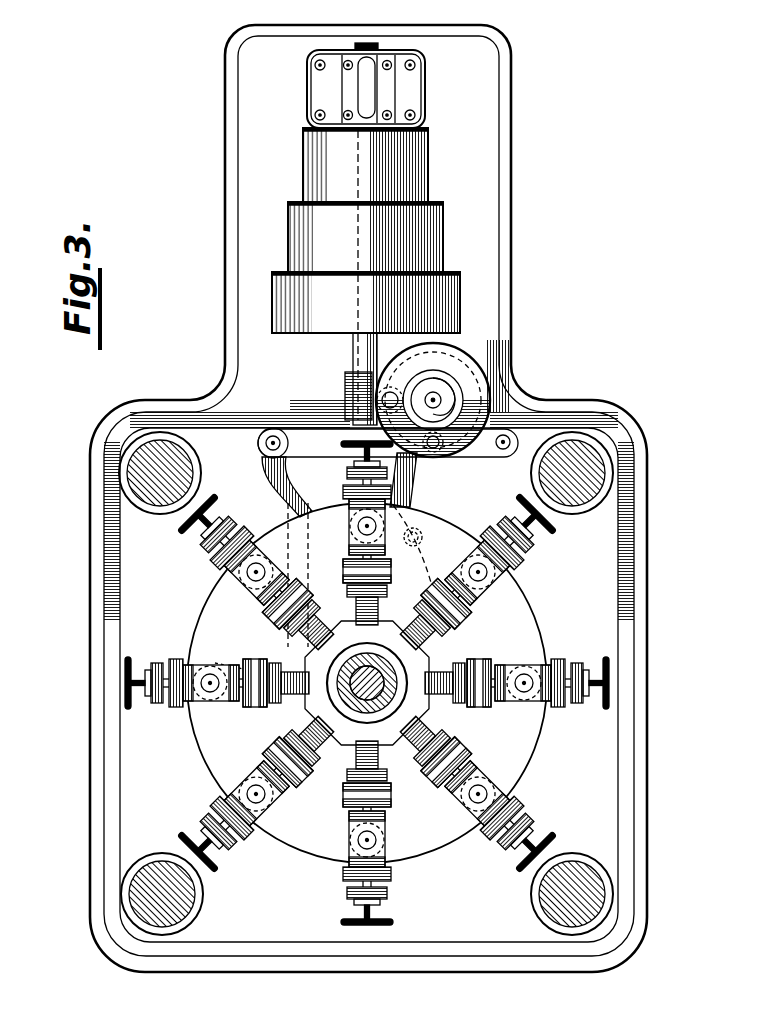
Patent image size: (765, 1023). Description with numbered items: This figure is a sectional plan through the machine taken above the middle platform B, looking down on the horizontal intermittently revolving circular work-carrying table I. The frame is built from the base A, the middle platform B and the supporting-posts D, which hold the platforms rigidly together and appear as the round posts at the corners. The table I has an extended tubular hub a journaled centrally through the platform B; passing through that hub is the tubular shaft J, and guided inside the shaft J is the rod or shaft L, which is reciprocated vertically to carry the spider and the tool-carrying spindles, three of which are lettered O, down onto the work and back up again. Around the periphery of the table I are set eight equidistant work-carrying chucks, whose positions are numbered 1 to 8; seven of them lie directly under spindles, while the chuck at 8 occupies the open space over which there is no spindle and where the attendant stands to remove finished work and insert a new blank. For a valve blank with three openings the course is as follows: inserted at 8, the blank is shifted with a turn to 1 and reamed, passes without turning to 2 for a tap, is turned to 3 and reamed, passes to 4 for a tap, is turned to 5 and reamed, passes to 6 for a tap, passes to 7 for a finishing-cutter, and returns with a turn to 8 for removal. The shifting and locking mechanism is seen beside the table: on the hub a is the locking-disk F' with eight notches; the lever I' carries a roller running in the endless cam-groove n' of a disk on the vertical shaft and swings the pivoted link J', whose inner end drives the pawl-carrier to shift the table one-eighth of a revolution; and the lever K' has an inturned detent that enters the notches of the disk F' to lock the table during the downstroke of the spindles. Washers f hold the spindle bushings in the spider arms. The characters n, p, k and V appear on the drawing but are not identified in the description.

The first chuck position 1 is at (473, 576).
The second chuck position 2 is at (362, 533).
The third chuck position 3 is at (260, 576).
The fourth chuck position 4 is at (217, 678).
The fifth chuck position 5 is at (260, 789).
The sixth chuck position 6 is at (359, 833).
The seventh chuck position 7 is at (473, 789).
The eighth chuck position 8 is at (517, 691).
The tubular hub a is at (366, 274).
The cover plate n is at (366, 65).
The endless cam-groove n' is at (433, 386).
The locking-disk F' is at (352, 379).
The washers f is at (345, 405).
The lever I' is at (295, 487).
The pivoted link J' is at (275, 465).
The lever K' is at (403, 480).
The pin p is at (503, 452).
The supporting-posts D is at (160, 500).
The base A is at (643, 572).
The middle platform B is at (590, 745).
The rod or shaft L is at (367, 683).
The stud k is at (225, 659).
The tubular shaft J is at (367, 683).
The work-carrying table I is at (367, 669).
The tool-carrying spindles O is at (385, 700).
The valve seat V is at (381, 634).